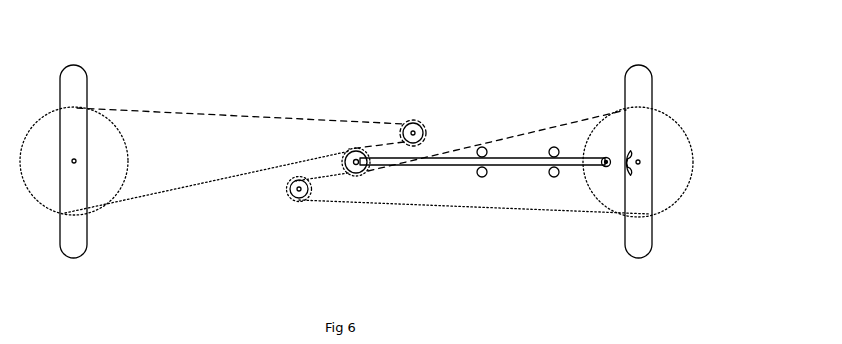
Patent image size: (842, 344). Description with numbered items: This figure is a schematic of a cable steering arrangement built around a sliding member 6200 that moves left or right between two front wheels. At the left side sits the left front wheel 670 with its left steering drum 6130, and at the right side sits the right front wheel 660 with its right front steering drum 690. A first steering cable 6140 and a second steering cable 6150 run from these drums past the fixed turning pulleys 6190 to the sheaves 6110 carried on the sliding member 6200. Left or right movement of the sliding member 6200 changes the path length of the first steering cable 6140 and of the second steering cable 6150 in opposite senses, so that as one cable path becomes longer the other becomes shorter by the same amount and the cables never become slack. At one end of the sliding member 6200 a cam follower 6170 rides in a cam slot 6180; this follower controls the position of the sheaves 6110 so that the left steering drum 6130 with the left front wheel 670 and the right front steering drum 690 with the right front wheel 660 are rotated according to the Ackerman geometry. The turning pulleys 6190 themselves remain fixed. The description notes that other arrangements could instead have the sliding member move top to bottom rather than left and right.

The left steering drum 6130 is at (40, 145).
The left front wheel 670 is at (72, 90).
The turning pulleys 6190 is at (405, 125).
The second steering cable 6150 is at (581, 121).
The cam follower 6170 is at (607, 156).
The right front wheel 660 is at (638, 85).
The right front steering drum 690 is at (665, 143).
The first steering cable 6140 is at (133, 203).
The sheaves 6110 is at (353, 174).
The sliding member 6200 is at (500, 163).
The cam slot 6180 is at (632, 184).